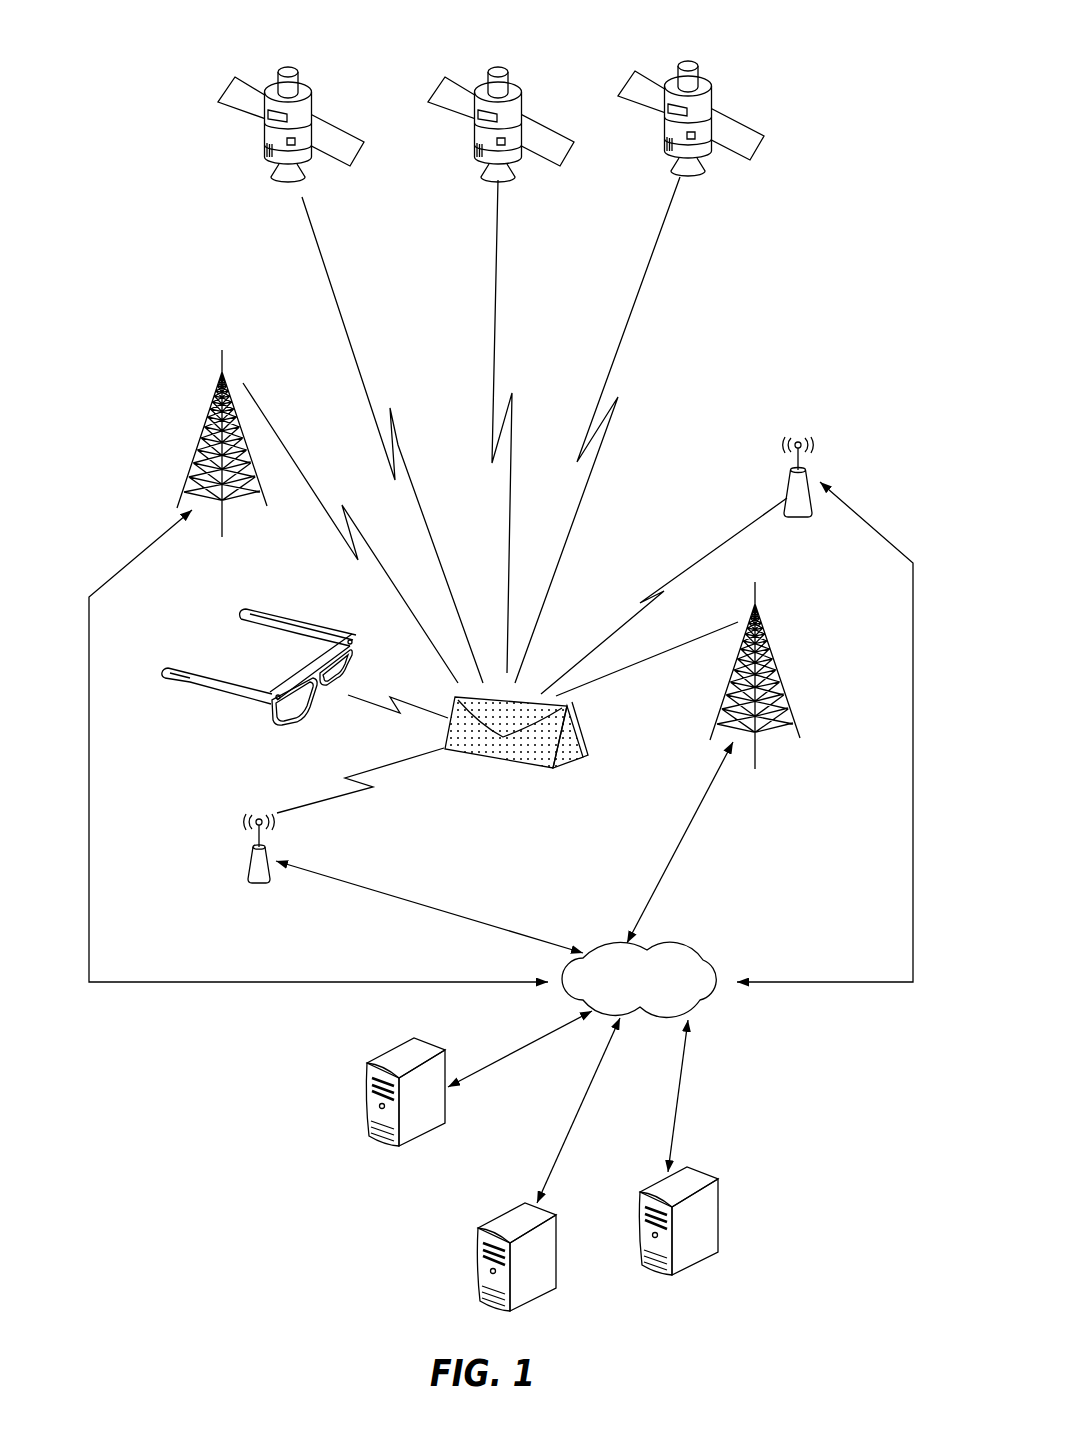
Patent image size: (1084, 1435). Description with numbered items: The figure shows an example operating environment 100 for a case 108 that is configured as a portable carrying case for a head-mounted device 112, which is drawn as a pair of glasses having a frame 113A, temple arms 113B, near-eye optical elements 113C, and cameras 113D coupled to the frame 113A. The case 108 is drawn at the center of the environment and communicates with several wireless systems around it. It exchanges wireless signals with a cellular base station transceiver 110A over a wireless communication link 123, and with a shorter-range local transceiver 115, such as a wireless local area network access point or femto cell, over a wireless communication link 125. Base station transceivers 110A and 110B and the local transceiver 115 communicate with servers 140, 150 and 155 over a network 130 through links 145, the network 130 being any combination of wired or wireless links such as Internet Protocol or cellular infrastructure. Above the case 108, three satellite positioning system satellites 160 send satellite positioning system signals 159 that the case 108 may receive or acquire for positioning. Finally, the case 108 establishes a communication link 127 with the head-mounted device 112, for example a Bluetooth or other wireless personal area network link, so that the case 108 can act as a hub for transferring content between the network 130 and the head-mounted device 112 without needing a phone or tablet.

The operating environment 100 is at (817, 83).
The case 108 is at (546, 764).
The base station transceiver 110A is at (778, 738).
The base station transceiver 110B is at (203, 438).
The head-mounted device 112 is at (260, 676).
The frame 113A is at (352, 642).
The temple arms 113B is at (324, 627).
The near-eye optical elements 113C is at (297, 703).
The cameras 113D is at (278, 695).
The local transceiver 115 is at (808, 470).
The wireless communication link 123 is at (280, 436).
The wireless communication link 125 is at (760, 517).
The communication link 127 is at (392, 722).
The network 130 is at (706, 952).
The server 140 is at (366, 1058).
The links 145 is at (382, 894).
The server 150 is at (722, 1227).
The server 155 is at (538, 1241).
The satellite positioning system signals 159 is at (337, 262).
The SPS satellites 160 is at (205, 133).